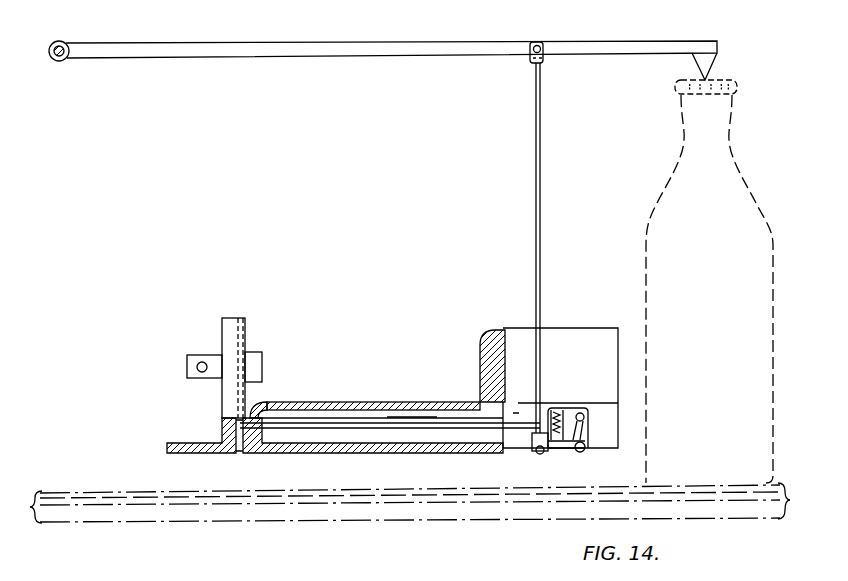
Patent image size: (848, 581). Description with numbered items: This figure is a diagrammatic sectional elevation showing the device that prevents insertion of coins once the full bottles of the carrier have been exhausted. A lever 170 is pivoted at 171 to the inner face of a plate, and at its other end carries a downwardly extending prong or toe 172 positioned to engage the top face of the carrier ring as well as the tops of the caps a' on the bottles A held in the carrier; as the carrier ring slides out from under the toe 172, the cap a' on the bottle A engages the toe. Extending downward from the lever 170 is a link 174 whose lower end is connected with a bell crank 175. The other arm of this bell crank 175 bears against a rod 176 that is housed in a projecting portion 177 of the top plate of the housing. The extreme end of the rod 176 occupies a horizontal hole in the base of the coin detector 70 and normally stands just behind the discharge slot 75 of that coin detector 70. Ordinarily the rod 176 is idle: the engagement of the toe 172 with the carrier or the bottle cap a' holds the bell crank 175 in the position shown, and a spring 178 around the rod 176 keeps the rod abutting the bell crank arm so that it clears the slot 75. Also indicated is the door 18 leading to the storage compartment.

The lever 170 is at (418, 42).
The pivot 171 is at (58, 41).
The prong or toe 172 is at (709, 66).
The link 174 is at (544, 218).
The bell crank 175 is at (566, 452).
The rod 176 is at (426, 420).
The projecting portion 177 is at (308, 402).
The spring 178 is at (562, 418).
The door 18 is at (390, 411).
The coin detector 70 is at (222, 330).
The discharge slot 75 is at (232, 431).
The bottle A is at (772, 310).
The cap a' is at (683, 92).